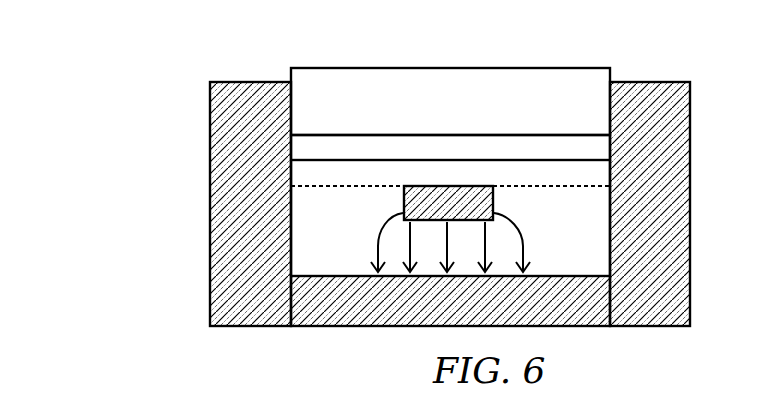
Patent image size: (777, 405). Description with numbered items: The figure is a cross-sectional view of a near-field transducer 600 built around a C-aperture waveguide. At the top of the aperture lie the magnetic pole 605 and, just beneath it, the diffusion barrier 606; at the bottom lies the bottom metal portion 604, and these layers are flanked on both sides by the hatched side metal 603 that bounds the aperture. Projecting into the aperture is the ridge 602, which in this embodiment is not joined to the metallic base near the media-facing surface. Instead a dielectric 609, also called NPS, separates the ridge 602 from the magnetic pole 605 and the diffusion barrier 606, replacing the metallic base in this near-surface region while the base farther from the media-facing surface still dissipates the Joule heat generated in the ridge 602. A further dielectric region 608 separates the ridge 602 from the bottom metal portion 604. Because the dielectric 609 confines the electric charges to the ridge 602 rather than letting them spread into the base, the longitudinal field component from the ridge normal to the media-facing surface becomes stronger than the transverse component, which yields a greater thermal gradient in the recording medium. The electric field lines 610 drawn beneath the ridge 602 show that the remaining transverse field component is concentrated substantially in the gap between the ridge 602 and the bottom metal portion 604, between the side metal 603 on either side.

The near-field transducer 600 is at (152, 134).
The ridge 602 is at (427, 185).
The side wall 603 is at (255, 110).
The bottom metal portion 604 is at (392, 306).
The magnetic pole 605 is at (515, 95).
The diffusion barrier 606 is at (468, 148).
The dielectric region 608 is at (335, 235).
The dielectric 609 is at (358, 172).
The electric field lines 610 is at (487, 241).